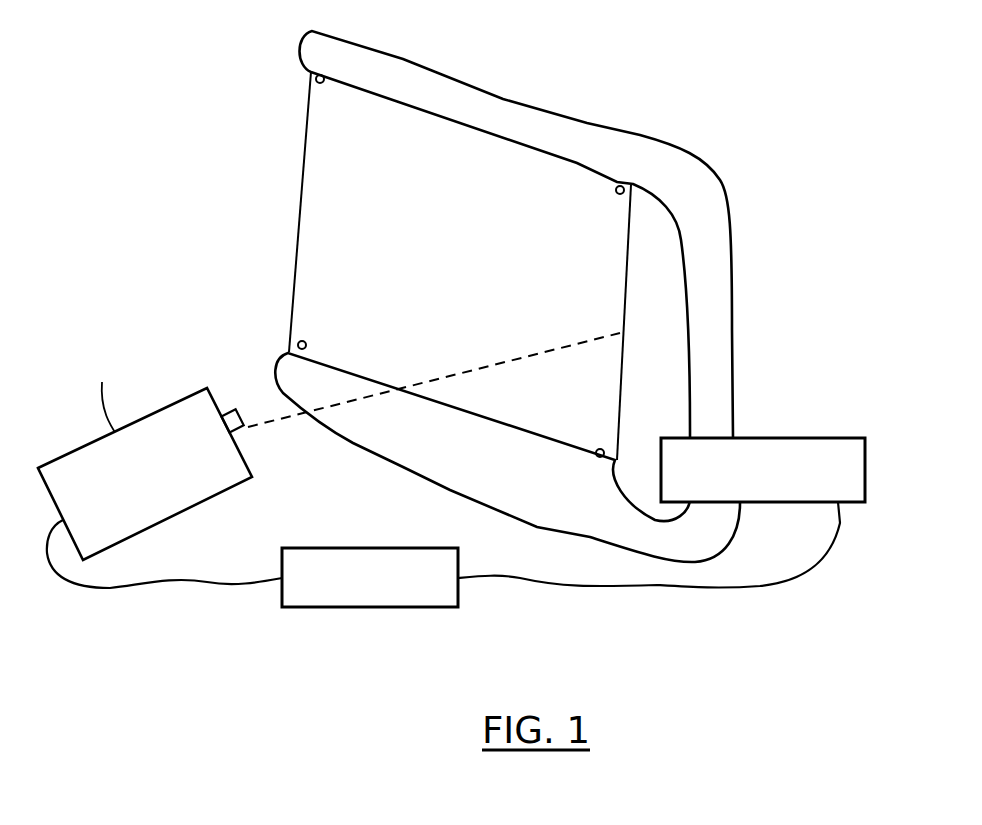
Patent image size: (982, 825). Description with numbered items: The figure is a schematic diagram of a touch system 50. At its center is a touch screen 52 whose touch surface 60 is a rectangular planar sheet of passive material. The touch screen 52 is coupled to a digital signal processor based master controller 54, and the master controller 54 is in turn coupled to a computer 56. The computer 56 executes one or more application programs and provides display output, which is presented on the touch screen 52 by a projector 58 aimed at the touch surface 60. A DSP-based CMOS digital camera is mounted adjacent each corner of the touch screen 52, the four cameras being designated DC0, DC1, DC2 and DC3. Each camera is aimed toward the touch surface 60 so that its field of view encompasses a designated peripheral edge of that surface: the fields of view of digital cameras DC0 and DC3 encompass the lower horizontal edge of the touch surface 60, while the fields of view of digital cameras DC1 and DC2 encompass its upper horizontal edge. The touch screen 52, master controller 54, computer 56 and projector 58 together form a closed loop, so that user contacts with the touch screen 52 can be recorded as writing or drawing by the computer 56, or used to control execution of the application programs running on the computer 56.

The touch system 50 is at (451, 337).
The touch screen 52 is at (581, 160).
The master controller 54 is at (792, 438).
The computer 56 is at (382, 607).
The projector 58 is at (329, 446).
The touch surface 60 is at (578, 302).
The digital camera DC0 is at (320, 337).
The digital camera DC1 is at (333, 97).
The digital camera DC2 is at (601, 201).
The digital camera DC3 is at (582, 442).